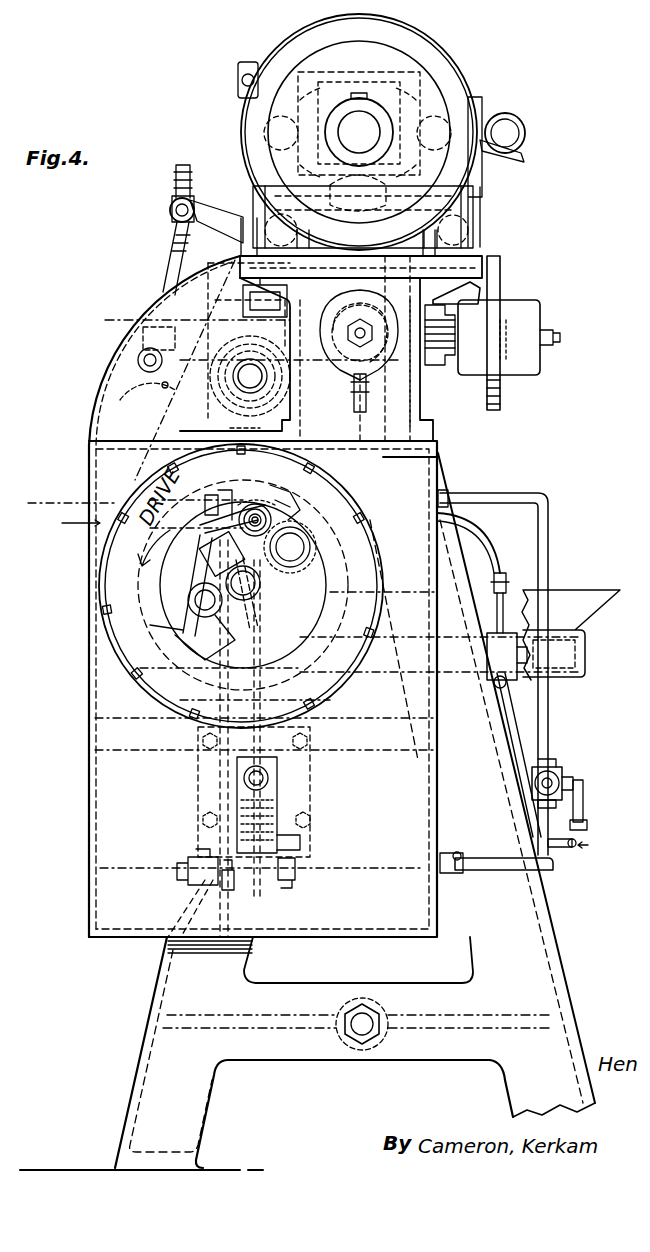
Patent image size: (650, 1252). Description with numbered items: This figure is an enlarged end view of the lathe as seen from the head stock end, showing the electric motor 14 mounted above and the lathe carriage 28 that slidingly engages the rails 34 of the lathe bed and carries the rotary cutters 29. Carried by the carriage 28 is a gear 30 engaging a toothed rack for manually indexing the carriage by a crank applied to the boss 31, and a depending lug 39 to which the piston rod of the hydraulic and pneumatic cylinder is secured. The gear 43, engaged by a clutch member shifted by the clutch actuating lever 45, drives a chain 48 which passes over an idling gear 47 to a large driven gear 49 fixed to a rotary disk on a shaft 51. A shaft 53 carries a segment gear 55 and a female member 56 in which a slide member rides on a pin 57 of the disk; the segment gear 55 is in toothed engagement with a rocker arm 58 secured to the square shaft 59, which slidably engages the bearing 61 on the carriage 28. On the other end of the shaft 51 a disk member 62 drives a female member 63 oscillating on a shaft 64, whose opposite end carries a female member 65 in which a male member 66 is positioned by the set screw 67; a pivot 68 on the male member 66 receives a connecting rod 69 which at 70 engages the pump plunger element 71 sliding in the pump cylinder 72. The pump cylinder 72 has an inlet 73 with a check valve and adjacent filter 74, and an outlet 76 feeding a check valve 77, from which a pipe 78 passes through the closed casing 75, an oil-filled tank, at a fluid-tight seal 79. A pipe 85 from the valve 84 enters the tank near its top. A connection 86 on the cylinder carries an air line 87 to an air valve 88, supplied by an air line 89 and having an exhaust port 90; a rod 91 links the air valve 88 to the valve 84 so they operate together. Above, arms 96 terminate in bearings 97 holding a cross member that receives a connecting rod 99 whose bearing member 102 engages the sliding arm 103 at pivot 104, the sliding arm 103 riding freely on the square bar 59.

The electric motor 14 is at (452, 90).
The rotary cutter 29 is at (465, 112).
The clutch actuating lever 45 is at (494, 150).
The gear 43 is at (385, 228).
The outwardly extending arm 96 is at (216, 208).
The bearing 97 is at (170, 213).
The connecting rod 99 is at (168, 270).
The closed casing 75 is at (133, 330).
The pivot 104 is at (138, 358).
The bearing member 102 is at (147, 338).
The sliding arm 103 is at (160, 383).
The square shaft 59 is at (205, 383).
The idling gear 47 is at (240, 300).
The bearing 61 is at (228, 330).
The depending lug 39 is at (351, 346).
The air line 87 is at (356, 407).
The connection 86 is at (420, 372).
The lathe carriage 28 is at (484, 268).
The rail 34 is at (470, 300).
The gear 30 is at (446, 358).
The boss 31 is at (558, 338).
The chain 48 is at (150, 458).
The female member 65 is at (237, 582).
The female member 56 is at (270, 580).
The segment gear 55 is at (275, 525).
The shaft 53 is at (312, 548).
The set screw 67 is at (309, 543).
The shaft 64 is at (235, 513).
The male member 66 is at (199, 499).
The pivot 68 is at (294, 499).
The shaft 51 is at (212, 570).
The pin 57 is at (188, 602).
The disk member 62 is at (168, 576).
The female member 63 is at (175, 635).
The connecting rod 69 is at (222, 686).
The large driven gear 49 is at (112, 499).
The rotatable engagement 70 is at (272, 778).
The pump cylinder 72 is at (235, 790).
The pump plunger element 71 is at (300, 823).
The filter 74 is at (183, 880).
The inlet 73 is at (256, 905).
The outlet 76 is at (290, 882).
The check valve 77 is at (333, 878).
The pipe 85 is at (551, 720).
The pipe 78 is at (497, 871).
The fluid-tight seal 79 is at (446, 878).
The air valve 88 is at (490, 655).
The exhaust port 90 is at (494, 676).
The valve 84 is at (560, 783).
The rod 91 is at (584, 814).
The air line 89 is at (575, 840).
The rocker arm 58 is at (230, 430).